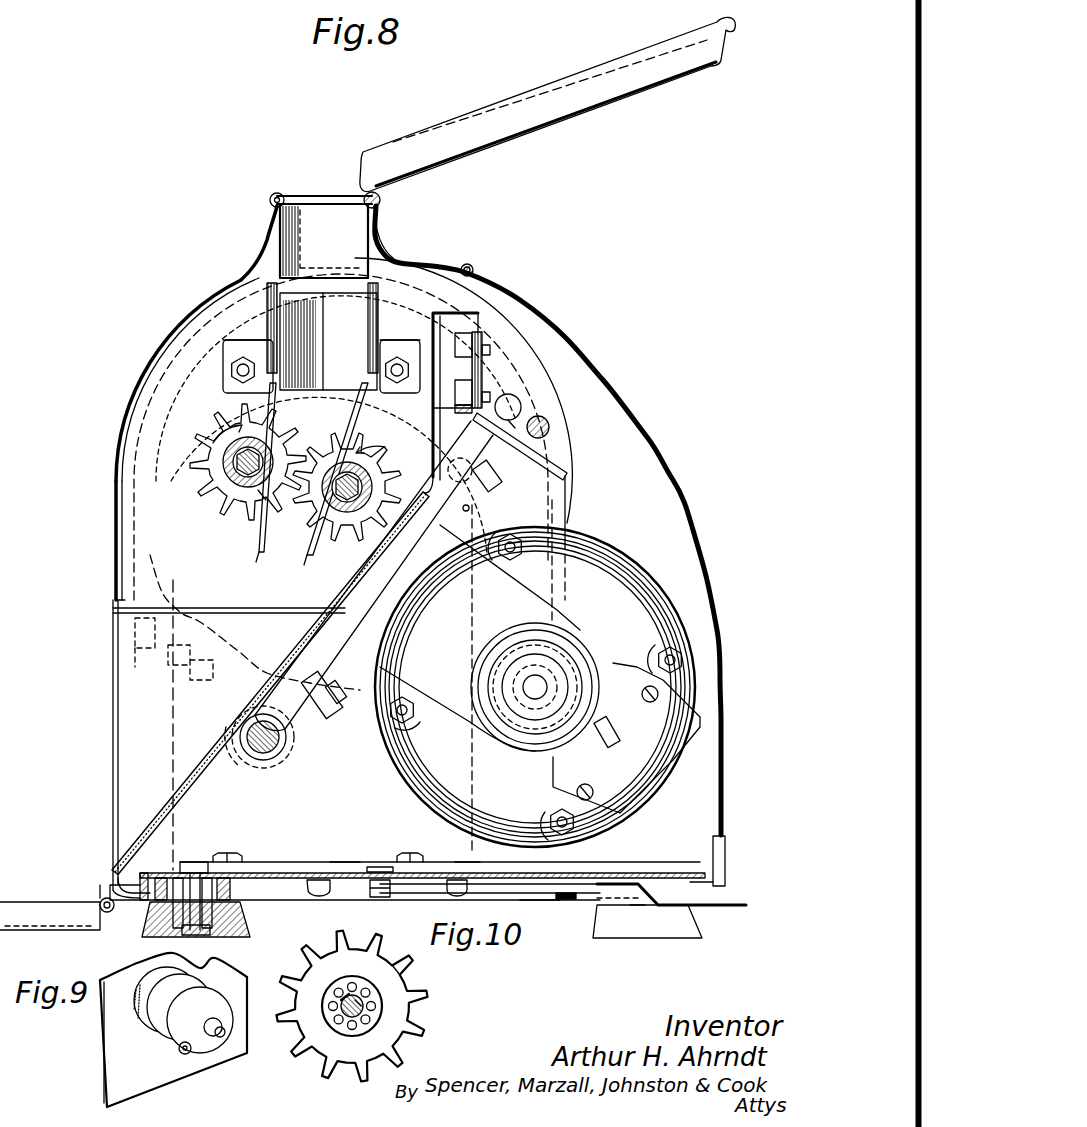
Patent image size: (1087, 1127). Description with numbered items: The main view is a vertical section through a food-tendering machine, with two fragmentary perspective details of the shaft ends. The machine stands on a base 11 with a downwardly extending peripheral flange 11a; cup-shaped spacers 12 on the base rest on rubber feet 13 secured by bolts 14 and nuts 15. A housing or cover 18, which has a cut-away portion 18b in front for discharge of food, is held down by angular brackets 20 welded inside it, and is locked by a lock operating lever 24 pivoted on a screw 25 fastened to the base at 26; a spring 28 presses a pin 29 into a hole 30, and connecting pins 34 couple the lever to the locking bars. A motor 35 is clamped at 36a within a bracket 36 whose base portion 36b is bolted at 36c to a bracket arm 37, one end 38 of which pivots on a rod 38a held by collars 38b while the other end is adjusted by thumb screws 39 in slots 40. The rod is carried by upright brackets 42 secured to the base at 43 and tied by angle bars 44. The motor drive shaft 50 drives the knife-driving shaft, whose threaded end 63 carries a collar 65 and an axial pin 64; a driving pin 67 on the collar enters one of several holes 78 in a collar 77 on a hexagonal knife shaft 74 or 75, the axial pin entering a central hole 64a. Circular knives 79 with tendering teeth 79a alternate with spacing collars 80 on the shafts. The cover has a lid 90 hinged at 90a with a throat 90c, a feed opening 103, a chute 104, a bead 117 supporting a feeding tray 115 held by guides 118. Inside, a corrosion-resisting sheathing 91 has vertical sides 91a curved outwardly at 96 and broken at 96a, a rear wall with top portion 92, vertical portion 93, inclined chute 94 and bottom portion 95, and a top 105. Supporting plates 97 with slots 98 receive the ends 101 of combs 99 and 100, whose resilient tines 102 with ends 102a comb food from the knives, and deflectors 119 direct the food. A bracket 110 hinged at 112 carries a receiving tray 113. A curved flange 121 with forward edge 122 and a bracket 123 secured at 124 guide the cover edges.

In FIG. 8, the base 11 is at (285, 870).
In FIG. 8, the peripheral flange 11a is at (138, 885).
In FIG. 8, the cup-shaped spacers 12 is at (637, 905).
In FIG. 8, the rubber feet 13 is at (250, 930).
In FIG. 8, the bolts 14 is at (205, 935).
In FIG. 8, the nuts 15 is at (208, 862).
In FIG. 8, the housing or cover 18 is at (567, 340).
In FIG. 8, the cut-away portion 18b is at (113, 768).
In FIG. 8, the angular brackets 20 is at (135, 868).
In FIG. 8, the lock operating lever 24 is at (610, 882).
In FIG. 8, the screw 25 is at (390, 897).
In FIG. 8, the fastening point of screw 26 is at (375, 866).
In FIG. 8, the spring 28 is at (538, 884).
In FIG. 8, the pin 29 is at (545, 900).
In FIG. 8, the hole 30 is at (570, 899).
In FIG. 8, the connecting pins 34 is at (318, 897).
In FIG. 8, the motor 35 is at (625, 570).
In FIG. 8, the bracket 36 is at (432, 715).
In FIG. 8, the motor clamp 36a is at (605, 732).
In FIG. 8, the base portion of bracket 36b is at (352, 682).
In FIG. 8, the bolts 36c is at (498, 472).
In FIG. 8, the bracket arm 37 is at (292, 740).
In FIG. 8, the end of bracket arm 38 is at (286, 752).
In FIG. 8, the rod 38a is at (262, 768).
In FIG. 8, the collars 38b is at (235, 760).
In FIG. 8, the thumb screws 39 is at (550, 420).
In FIG. 8, the slots 40 is at (556, 470).
In FIG. 8, the upwardly extending brackets 42 is at (465, 866).
In FIG. 8, the securing point of brackets 43 is at (235, 852).
In FIG. 8, the angle bars 44 is at (335, 860).
In FIG. 8, the motor drive shaft 50 is at (546, 682).
In FIG. 9, the threaded end of shaft 63 is at (218, 1022).
In FIG. 9, the axially extending pin 64 is at (226, 1031).
In FIG. 10, the axially extending hole 64a is at (350, 1012).
In FIG. 9, the collar 65 is at (213, 1052).
In FIG. 9, the driving pin 67 is at (181, 1053).
In FIG. 8, the knife shaft 74 is at (373, 473).
In FIG. 10, the knife shaft 74 is at (348, 1020).
In FIG. 8, the knife shaft 75 is at (258, 490).
In FIG. 10, the collar 77 is at (383, 1018).
In FIG. 10, the holes 78 is at (340, 1002).
In FIG. 8, the knives 79 is at (213, 436).
In FIG. 10, the knives 79 is at (413, 1010).
In FIG. 8, the tendering teeth or cutting edges 79a is at (399, 443).
In FIG. 10, the tendering teeth or cutting edges 79a is at (410, 985).
In FIG. 8, the spacing collars 80 is at (230, 490).
In FIG. 8, the lid portion 90 is at (410, 262).
In FIG. 8, the hinge 90a is at (475, 268).
In FIG. 8, the throat 90c is at (268, 232).
In FIG. 8, the sheathing 91 is at (128, 466).
In FIG. 8, the sides of sheath 91a is at (140, 418).
In FIG. 8, the top portion of rear wall 92 is at (474, 272).
In FIG. 8, the vertical portion 93 is at (440, 387).
In FIG. 8, the chute or inclined portion 94 is at (242, 740).
In FIG. 8, the bottom portion 95 is at (117, 868).
In FIG. 8, the outward curve of sheathing sides 96 is at (222, 305).
In FIG. 8, the break in front edges 96a is at (116, 598).
In FIG. 8, the supporting plates or brackets 97 is at (223, 347).
In FIG. 8, the slots 98 is at (225, 388).
In FIG. 8, the comb or guide-plate 99 is at (268, 323).
In FIG. 8, the comb or guide-plate 100 is at (380, 330).
In FIG. 8, the ends of combs 101 is at (378, 360).
In FIG. 8, the tines or teeth 102 is at (278, 400).
In FIG. 8, the ends of tines 102a is at (275, 553).
In FIG. 8, the opening 103 is at (279, 193).
In FIG. 8, the chute 104 is at (324, 241).
In FIG. 8, the top of sheathing 105 is at (398, 262).
In FIG. 8, the tray-supporting bracket 110 is at (140, 925).
In FIG. 8, the hinge 112 is at (112, 913).
In FIG. 8, the tray 113 is at (70, 928).
In FIG. 8, the feeding tray 115 is at (533, 100).
In FIG. 8, the bead 117 is at (330, 194).
In FIG. 8, the guides 118 is at (381, 202).
In FIG. 8, the end plates or deflectors 119 is at (306, 350).
In FIG. 8, the outwardly extending flange 121 is at (470, 508).
In FIG. 8, the forward edge of flange 122 is at (215, 650).
In FIG. 8, the plate or bracket 123 is at (140, 660).
In FIG. 8, the securing point of bracket 124 is at (135, 628).